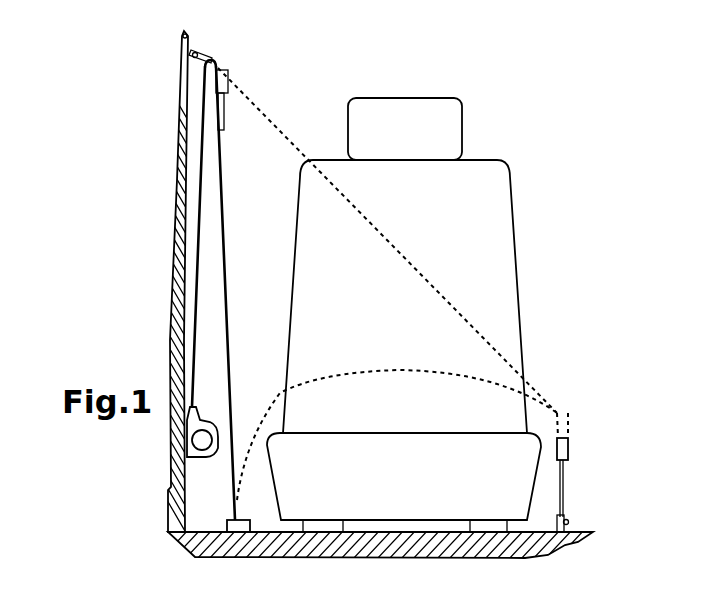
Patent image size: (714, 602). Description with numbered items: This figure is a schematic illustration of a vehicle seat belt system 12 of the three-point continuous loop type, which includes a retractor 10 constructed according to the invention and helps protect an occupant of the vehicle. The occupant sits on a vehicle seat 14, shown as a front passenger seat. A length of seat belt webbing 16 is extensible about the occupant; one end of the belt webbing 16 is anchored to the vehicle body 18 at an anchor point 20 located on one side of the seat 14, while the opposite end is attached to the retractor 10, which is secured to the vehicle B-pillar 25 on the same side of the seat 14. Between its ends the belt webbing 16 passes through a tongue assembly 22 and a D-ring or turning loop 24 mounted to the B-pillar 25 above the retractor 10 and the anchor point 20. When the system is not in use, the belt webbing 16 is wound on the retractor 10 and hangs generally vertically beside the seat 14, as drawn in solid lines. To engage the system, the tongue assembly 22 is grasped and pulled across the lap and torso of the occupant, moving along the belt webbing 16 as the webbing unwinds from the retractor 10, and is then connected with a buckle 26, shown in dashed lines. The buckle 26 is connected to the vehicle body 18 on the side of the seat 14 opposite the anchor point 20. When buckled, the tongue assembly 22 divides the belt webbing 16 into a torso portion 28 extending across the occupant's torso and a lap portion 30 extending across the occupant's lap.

The retractor 10 is at (322, 86).
The seat belt system 12 is at (437, 315).
The vehicle seat 14 is at (515, 275).
The seat belt webbing 16 is at (234, 286).
The vehicle body 18 is at (210, 548).
The anchor point 20 is at (244, 520).
The tongue assembly 22 is at (226, 82).
The D-ring or turning loop 24 is at (196, 54).
The B-pillar 25 is at (182, 157).
The buckle 26 is at (568, 455).
The torso portion 28 is at (425, 272).
The lap portion 30 is at (400, 370).